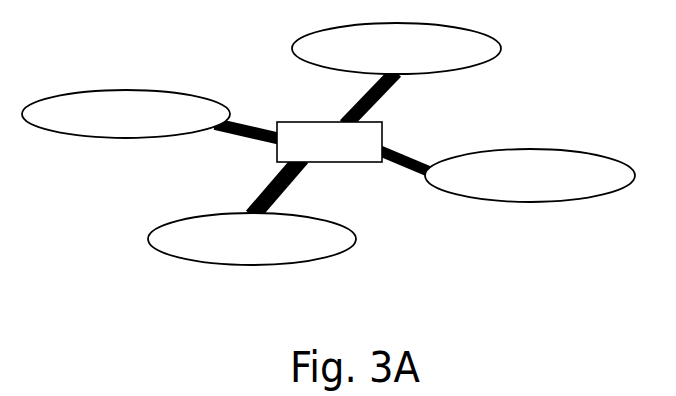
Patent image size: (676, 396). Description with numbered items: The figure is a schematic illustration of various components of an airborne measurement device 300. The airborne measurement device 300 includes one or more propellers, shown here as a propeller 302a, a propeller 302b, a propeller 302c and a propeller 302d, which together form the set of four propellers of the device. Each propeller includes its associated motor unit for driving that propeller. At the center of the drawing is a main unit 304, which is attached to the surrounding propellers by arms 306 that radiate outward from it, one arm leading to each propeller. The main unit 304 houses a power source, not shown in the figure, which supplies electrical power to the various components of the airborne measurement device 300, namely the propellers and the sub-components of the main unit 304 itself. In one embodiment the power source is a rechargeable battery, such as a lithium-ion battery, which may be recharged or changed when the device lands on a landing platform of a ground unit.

The airborne measurement device 300 is at (509, 242).
The propeller 302a is at (92, 127).
The propeller 302b is at (368, 61).
The propeller 302c is at (550, 190).
The propeller 302d is at (270, 250).
The main unit 304 is at (310, 156).
The arms 306 is at (240, 136).